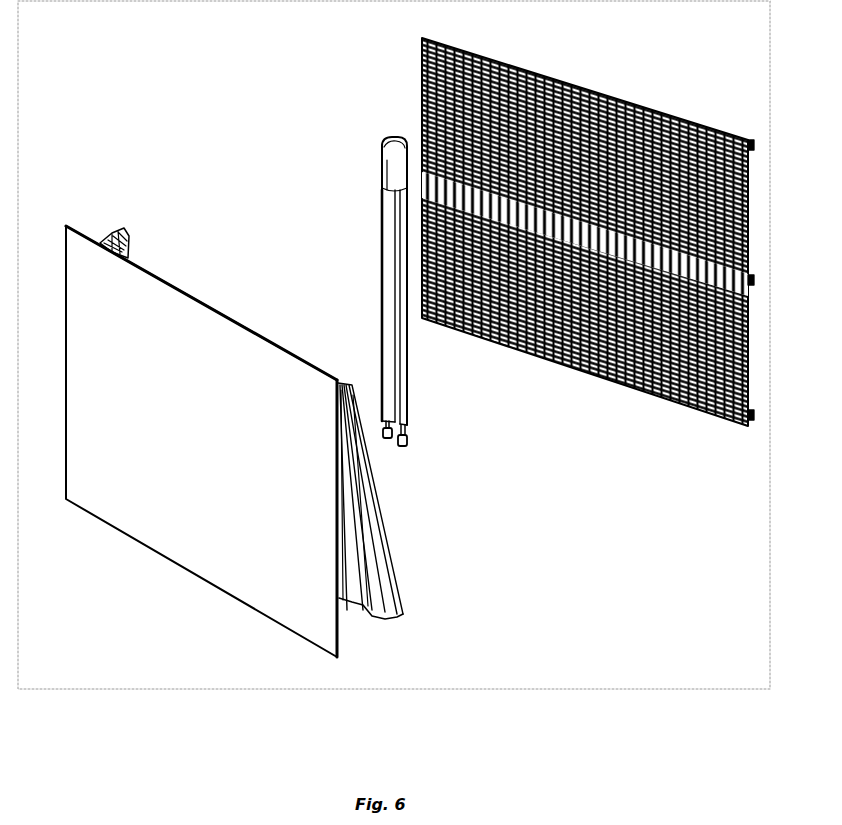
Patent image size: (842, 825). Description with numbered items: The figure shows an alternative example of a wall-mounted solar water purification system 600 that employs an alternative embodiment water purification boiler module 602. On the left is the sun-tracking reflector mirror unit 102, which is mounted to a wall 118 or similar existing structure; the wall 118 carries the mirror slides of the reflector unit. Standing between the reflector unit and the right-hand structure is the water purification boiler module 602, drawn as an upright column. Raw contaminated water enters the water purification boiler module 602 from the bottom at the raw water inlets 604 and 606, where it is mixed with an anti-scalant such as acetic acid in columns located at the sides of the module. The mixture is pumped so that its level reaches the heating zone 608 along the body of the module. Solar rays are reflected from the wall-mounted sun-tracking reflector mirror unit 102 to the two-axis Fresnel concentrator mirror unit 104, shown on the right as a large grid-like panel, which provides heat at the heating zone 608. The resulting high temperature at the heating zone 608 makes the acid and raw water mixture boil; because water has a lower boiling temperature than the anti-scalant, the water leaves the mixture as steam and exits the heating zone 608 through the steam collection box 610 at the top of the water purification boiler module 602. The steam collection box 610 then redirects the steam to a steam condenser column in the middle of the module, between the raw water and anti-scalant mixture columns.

The wall-mounted solar water purification system 600 is at (228, 145).
The sun-tracking reflector mirror unit 102 is at (402, 532).
The two-axis Fresnel concentrator mirror unit 104 is at (619, 407).
The wall 118 is at (323, 608).
The water purification boiler module 602 is at (348, 242).
The raw water inlet 604 is at (408, 438).
The raw water inlet 606 is at (384, 426).
The heating zone 608 is at (386, 199).
The steam collection box 610 is at (392, 161).